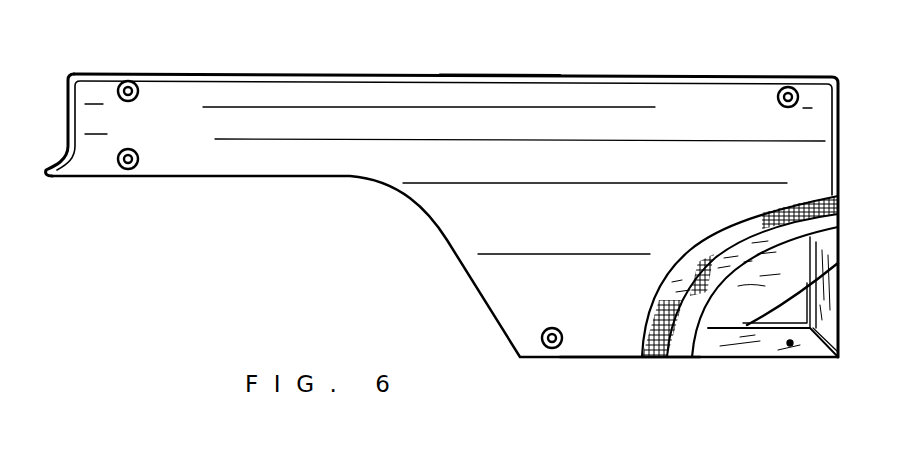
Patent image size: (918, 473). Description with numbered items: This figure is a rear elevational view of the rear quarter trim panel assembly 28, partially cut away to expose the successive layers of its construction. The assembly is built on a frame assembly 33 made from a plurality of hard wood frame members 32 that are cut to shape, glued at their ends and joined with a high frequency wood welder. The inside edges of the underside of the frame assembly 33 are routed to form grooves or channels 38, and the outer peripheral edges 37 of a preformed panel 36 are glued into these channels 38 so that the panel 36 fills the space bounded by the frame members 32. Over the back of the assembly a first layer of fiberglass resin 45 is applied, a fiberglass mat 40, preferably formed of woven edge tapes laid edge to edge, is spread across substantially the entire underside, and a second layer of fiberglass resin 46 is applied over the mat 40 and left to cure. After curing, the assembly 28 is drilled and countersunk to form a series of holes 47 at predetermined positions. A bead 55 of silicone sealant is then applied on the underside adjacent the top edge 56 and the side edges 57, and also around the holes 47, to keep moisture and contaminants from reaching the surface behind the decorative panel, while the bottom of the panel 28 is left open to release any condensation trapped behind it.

The rear quarter trim panel assembly 28 is at (545, 169).
The frame member 32 is at (840, 303).
The frame assembly 33 is at (819, 370).
The preformed panel 36 is at (782, 288).
The outer peripheral edge of the panel 37 is at (718, 324).
The groove or channel 38 is at (812, 292).
The fiberglass mat 40 is at (840, 203).
The first layer of fiberglass resin 45 is at (677, 348).
The second layer of fiberglass resin 46 is at (607, 344).
The hole 47 is at (130, 84).
The bead of sealant 55 is at (135, 153).
The top edge 56 is at (503, 76).
The side edge 57 is at (66, 112).